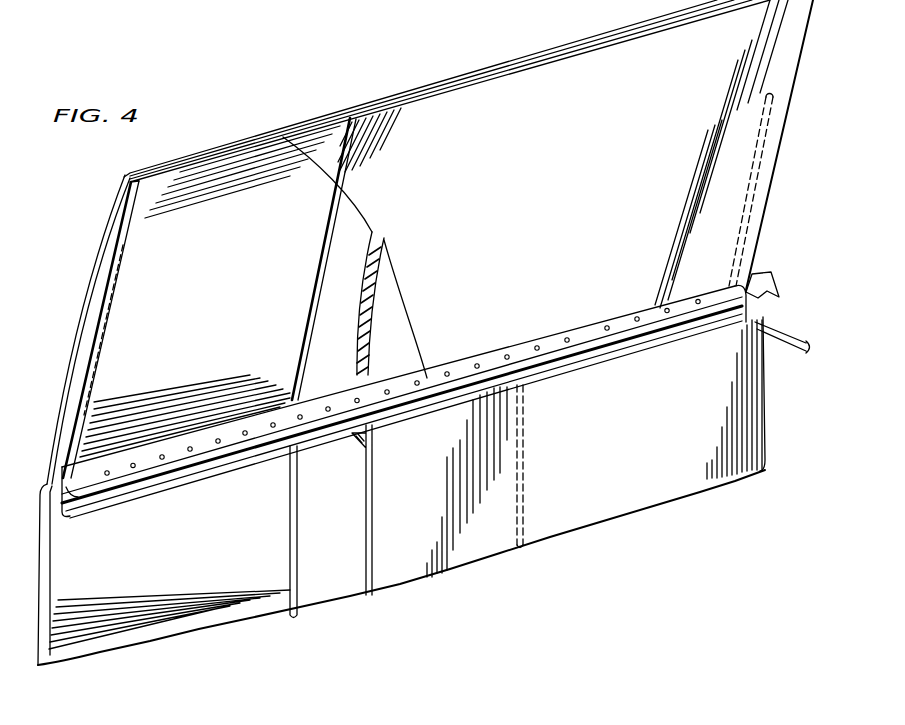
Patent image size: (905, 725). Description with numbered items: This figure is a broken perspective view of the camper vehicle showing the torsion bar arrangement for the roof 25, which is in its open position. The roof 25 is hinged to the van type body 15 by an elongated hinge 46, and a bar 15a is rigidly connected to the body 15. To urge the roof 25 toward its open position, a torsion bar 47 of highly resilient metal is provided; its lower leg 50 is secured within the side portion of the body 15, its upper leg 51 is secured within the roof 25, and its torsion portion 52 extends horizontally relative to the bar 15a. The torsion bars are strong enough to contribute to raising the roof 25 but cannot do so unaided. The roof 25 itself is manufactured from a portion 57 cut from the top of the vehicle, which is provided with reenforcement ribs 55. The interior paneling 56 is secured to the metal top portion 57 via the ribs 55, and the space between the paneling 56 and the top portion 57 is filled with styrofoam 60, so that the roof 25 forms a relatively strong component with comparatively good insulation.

The roof 25 is at (551, 50).
The interior paneling 56 is at (782, 77).
The portion cut from the top of the vehicle 57 is at (229, 156).
The torsion bar 47 is at (758, 168).
The reenforcement ribs 55 is at (327, 228).
The styrofoam 60 is at (388, 287).
The upper leg 51 is at (106, 324).
The elongated hinge 46 is at (56, 482).
The van type body 15 is at (44, 530).
The bar 15a is at (137, 484).
The torsion portion 52 is at (194, 463).
The lower leg 50 is at (290, 578).